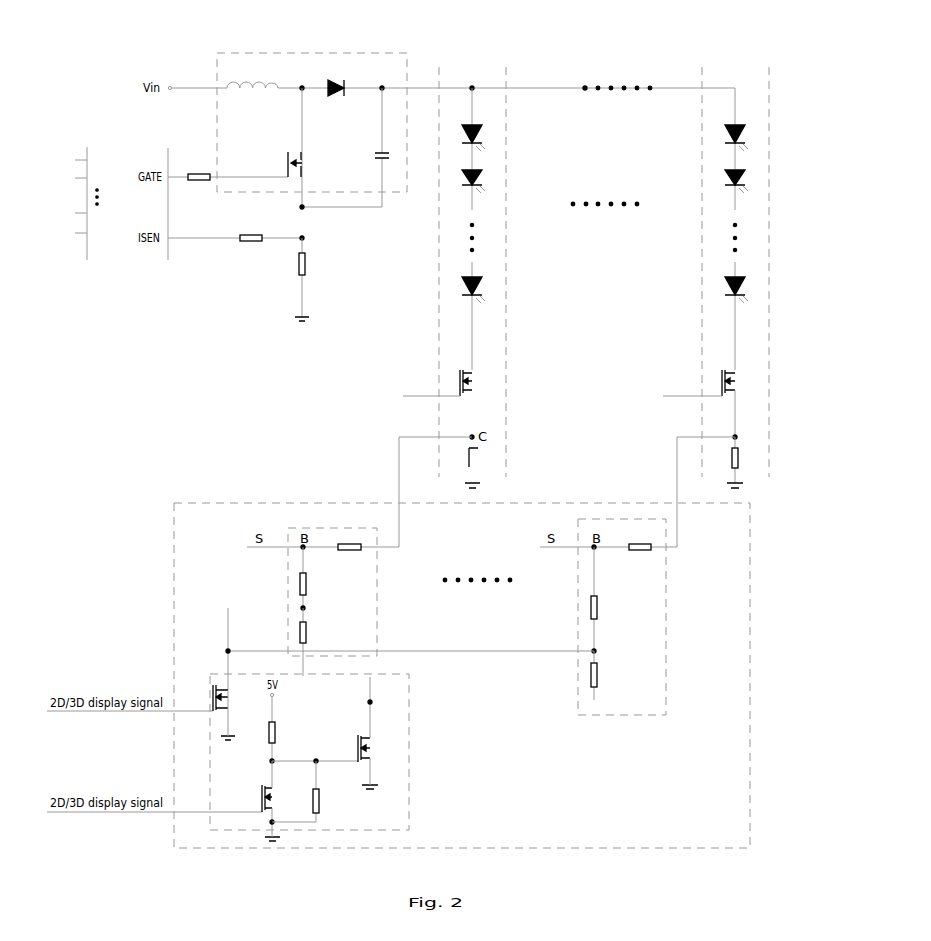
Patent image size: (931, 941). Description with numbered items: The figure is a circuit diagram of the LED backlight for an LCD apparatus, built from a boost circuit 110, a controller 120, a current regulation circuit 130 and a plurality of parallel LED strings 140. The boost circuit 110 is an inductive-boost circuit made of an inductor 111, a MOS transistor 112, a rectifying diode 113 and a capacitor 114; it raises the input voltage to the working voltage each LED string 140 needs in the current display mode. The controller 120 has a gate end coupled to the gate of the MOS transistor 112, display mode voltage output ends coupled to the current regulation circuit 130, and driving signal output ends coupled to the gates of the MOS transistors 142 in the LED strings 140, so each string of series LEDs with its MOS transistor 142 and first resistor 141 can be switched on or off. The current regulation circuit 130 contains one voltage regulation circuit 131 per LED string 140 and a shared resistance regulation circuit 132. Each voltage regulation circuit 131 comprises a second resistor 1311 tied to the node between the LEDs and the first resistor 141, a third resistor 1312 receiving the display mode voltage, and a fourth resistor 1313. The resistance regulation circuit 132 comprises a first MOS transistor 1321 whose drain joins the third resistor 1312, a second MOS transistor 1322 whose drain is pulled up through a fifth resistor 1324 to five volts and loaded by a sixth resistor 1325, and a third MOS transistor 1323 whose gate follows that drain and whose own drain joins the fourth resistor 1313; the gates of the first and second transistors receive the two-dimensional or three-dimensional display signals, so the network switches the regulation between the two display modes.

The boost circuit 110 is at (407, 53).
The inductor 111 is at (252, 74).
The MOS transistor 112 is at (246, 147).
The rectifying diode 113 is at (336, 78).
The capacitor 114 is at (345, 147).
The controller 120 is at (87, 145).
The current regulation circuit 130 is at (750, 667).
The voltage regulation circuit 131 is at (717, 610).
The resistance regulation circuit 132 is at (409, 753).
The LED string 140 is at (803, 26).
The first resistor 141 is at (613, 462).
The MOS transistor 142 is at (581, 403).
The second resistor 1311 is at (495, 538).
The third resistor 1312 is at (462, 599).
The fourth resistor 1313 is at (462, 654).
The first MOS transistor 1321 is at (234, 712).
The second MOS transistor 1322 is at (281, 801).
The third MOS transistor 1323 is at (378, 733).
The fifth resistor 1324 is at (284, 729).
The sixth resistor 1325 is at (329, 791).